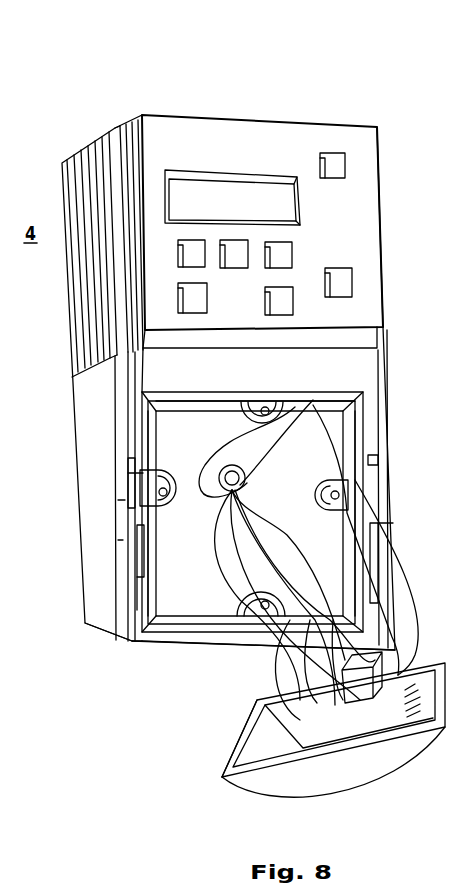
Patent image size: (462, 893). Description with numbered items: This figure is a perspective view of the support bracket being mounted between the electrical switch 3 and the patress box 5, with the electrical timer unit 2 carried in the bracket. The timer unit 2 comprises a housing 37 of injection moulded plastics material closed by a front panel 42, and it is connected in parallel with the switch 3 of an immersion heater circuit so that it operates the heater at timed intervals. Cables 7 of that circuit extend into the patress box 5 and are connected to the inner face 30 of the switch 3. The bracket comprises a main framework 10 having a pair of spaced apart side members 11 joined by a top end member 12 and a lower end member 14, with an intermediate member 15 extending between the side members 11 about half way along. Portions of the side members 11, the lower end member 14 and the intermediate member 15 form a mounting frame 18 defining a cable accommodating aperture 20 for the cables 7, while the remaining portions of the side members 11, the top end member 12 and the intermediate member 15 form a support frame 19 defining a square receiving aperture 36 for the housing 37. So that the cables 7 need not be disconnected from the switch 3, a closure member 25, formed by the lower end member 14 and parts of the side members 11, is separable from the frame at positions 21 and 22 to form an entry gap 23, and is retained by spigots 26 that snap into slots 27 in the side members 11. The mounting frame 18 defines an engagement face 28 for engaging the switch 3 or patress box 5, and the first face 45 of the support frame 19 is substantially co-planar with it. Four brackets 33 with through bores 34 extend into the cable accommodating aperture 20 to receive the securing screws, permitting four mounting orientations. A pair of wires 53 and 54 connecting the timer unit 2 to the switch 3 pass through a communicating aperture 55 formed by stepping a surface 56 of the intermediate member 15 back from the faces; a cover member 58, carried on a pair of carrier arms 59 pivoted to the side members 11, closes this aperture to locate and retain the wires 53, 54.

The electrical timer unit 2 is at (378, 177).
The electrical switch 3 is at (319, 747).
The patress box 5 is at (101, 648).
The cables 7 is at (278, 680).
The main framework 10 is at (80, 163).
The side members 11 is at (82, 360).
The top end member 12 is at (120, 128).
The lower end member 14 is at (181, 646).
The intermediate member 15 is at (353, 393).
The mounting frame 18 is at (123, 500).
The support frame 19 is at (80, 195).
The cable accommodating aperture 20 is at (152, 535).
The separation position 21 is at (116, 540).
The separation position 22 is at (384, 525).
The entry gap 23 is at (380, 553).
The closure member 25 is at (146, 645).
The spigots 26 is at (146, 482).
The slots 27 is at (383, 490).
The engagement face 28 is at (150, 525).
The inner face 30 is at (222, 777).
The brackets 33 is at (260, 405).
The through bores 34 is at (268, 410).
The receiving aperture 36 is at (128, 160).
The housing 37 is at (130, 298).
The front panel 42 is at (376, 200).
The first face 45 is at (120, 243).
The wire 53 is at (287, 448).
The wire 54 is at (252, 452).
The communicating aperture 55 is at (370, 440).
The surface 56 is at (191, 410).
The cover member 58 is at (355, 378).
The carrier arms 59 is at (370, 412).